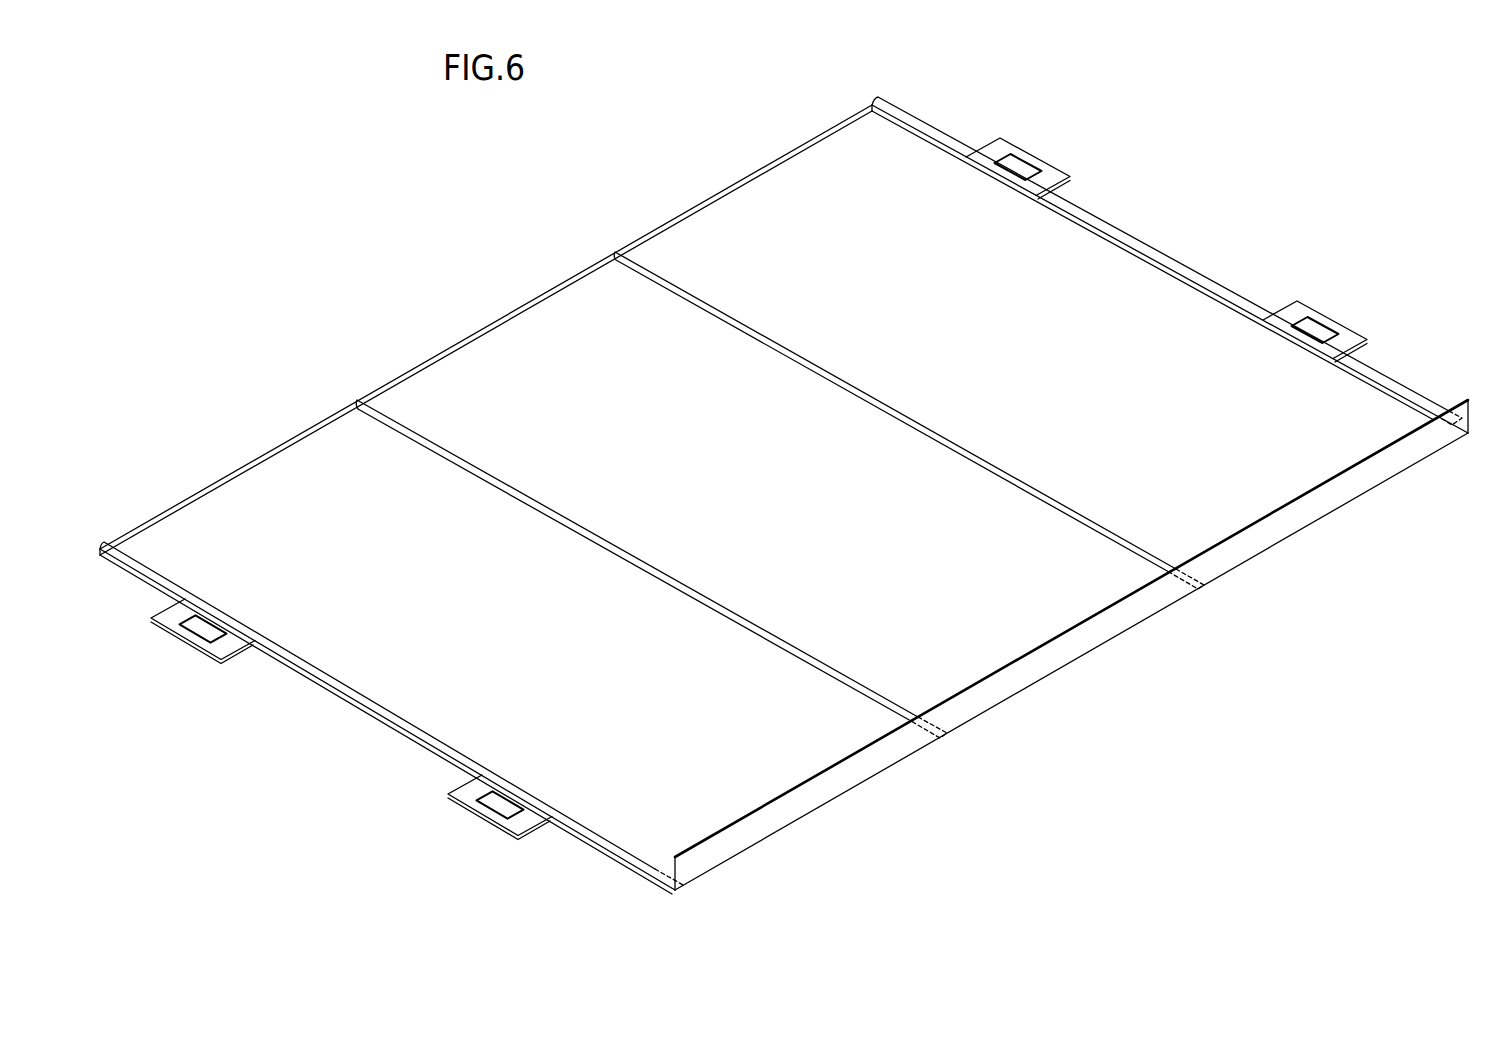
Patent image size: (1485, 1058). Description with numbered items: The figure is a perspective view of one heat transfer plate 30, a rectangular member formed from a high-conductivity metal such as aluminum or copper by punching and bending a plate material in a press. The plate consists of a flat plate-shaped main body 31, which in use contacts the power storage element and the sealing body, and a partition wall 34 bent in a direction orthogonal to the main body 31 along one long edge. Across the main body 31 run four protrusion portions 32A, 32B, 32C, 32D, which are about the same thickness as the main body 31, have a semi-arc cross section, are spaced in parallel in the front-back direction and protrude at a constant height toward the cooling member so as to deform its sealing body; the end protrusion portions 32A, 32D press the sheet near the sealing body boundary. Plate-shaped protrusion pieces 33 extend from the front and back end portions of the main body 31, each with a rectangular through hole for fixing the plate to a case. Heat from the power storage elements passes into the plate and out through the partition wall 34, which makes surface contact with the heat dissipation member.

The heat transfer plate 30 is at (500, 168).
The main body 31 is at (800, 185).
The protrusion portion 32A is at (358, 705).
The protrusion portion 32B is at (485, 470).
The protrusion portion 32C is at (718, 308).
The protrusion portion 32D is at (940, 143).
The protrusion piece 33 is at (1040, 165).
The partition wall 34 is at (1305, 512).